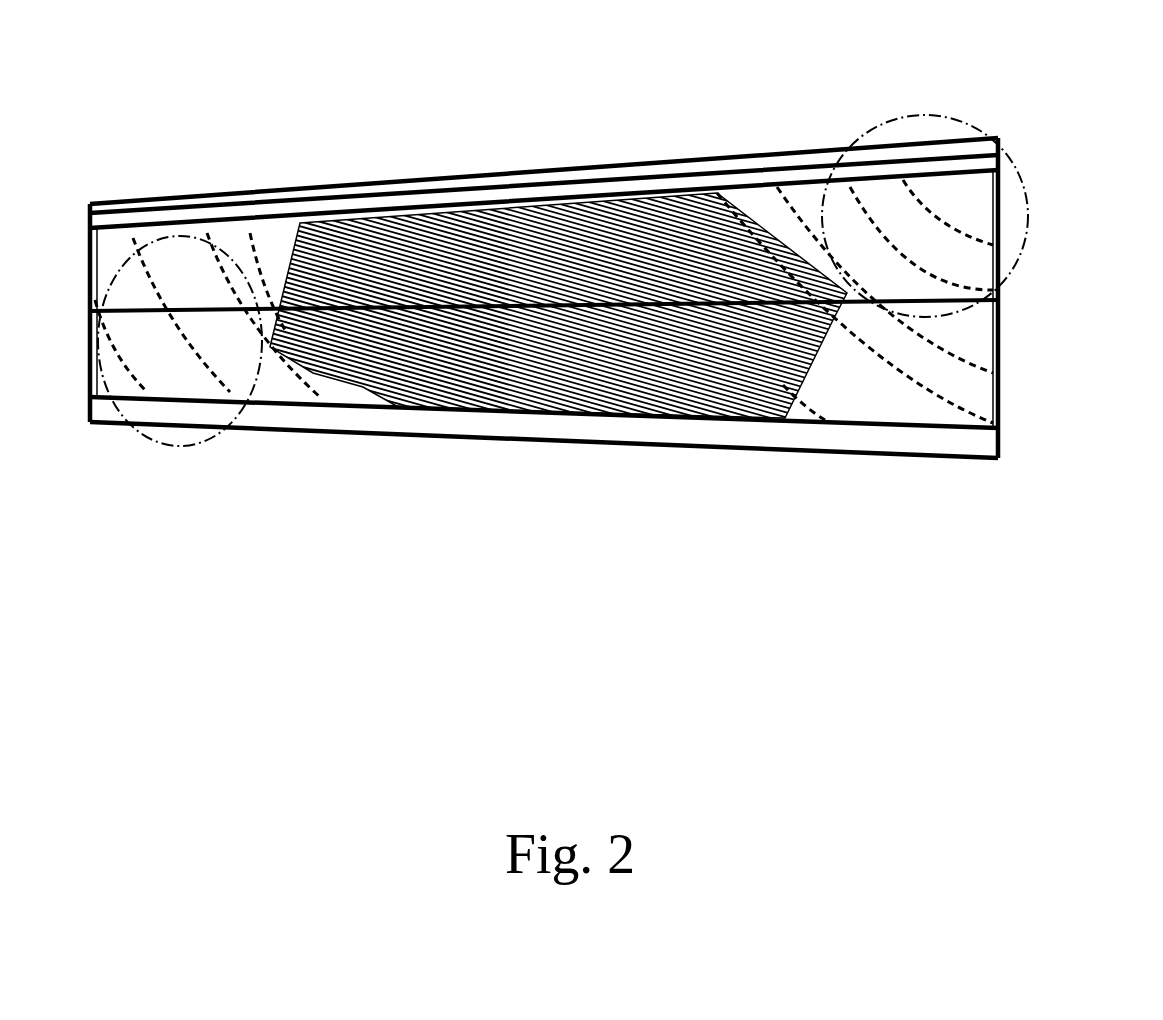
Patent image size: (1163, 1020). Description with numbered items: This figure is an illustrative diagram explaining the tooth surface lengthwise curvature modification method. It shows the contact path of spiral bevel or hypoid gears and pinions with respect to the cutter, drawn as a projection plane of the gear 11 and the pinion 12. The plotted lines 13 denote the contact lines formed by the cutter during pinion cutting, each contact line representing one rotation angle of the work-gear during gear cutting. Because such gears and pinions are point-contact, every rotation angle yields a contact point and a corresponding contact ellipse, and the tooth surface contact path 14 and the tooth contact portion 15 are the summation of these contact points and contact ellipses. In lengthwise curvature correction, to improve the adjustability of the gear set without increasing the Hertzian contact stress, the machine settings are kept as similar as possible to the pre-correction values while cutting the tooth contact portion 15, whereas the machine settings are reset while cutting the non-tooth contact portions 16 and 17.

The gear 11 is at (840, 453).
The pinion 12 is at (833, 182).
The plotted lines 13 is at (940, 403).
The tooth surface contact path 14 is at (570, 275).
The tooth contact portion 15 is at (300, 238).
The non-tooth contact portion 16 is at (1022, 197).
The non-tooth contact portion 17 is at (170, 447).